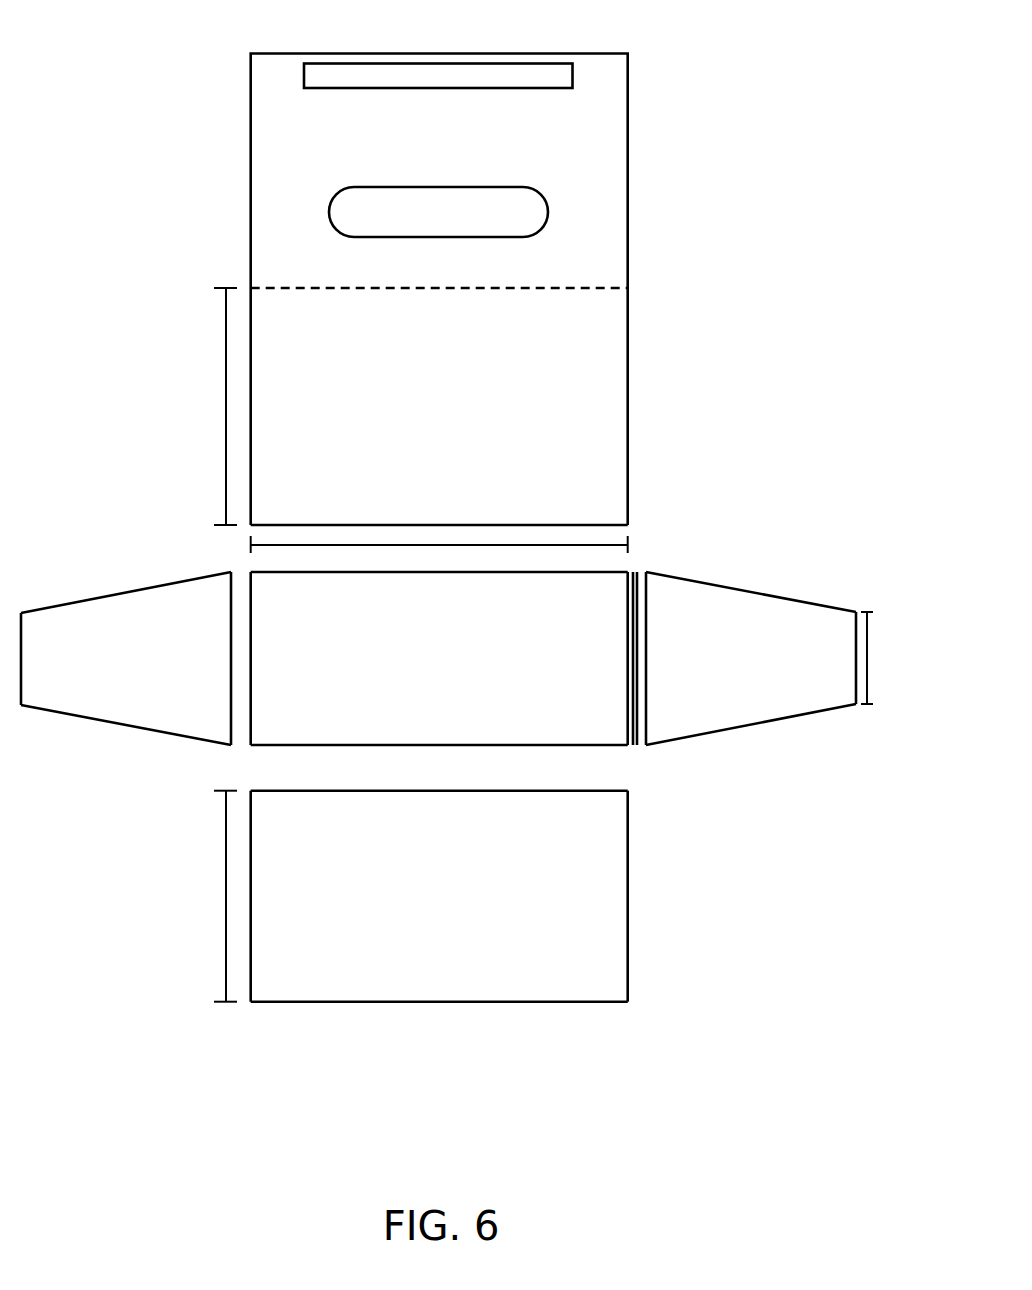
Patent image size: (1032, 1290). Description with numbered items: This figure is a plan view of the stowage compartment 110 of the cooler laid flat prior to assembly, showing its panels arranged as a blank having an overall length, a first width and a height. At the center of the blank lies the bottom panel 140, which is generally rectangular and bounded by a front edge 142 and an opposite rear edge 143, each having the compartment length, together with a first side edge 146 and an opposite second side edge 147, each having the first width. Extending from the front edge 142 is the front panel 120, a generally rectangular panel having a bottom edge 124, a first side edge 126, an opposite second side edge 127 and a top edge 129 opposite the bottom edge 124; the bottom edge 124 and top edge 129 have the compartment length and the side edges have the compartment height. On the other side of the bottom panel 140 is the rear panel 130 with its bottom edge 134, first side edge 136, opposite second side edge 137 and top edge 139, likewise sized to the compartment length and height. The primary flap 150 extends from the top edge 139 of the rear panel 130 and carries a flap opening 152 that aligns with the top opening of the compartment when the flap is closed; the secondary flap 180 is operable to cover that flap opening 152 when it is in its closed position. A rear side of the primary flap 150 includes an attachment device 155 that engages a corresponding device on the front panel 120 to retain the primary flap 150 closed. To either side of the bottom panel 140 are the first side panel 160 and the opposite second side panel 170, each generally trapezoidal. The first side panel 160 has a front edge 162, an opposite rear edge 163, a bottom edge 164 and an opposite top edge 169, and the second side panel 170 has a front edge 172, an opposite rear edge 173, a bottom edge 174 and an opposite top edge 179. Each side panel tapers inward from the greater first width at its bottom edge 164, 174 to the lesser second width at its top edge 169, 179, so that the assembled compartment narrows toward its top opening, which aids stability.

The stowage compartment 110 is at (130, 64).
The front panel 120 is at (607, 838).
The bottom edge 124 is at (438, 792).
The first side edge 126 is at (252, 895).
The second side edge 127 is at (628, 895).
The top edge 129 is at (432, 1001).
The rear panel 130 is at (607, 340).
The bottom edge 134 is at (432, 524).
The first side edge 136 is at (252, 405).
The second side edge 137 is at (628, 405).
The top edge 139 is at (438, 289).
The bottom panel 140 is at (353, 717).
The front edge 142 is at (432, 744).
The rear edge 143 is at (438, 573).
The first side edge 146 is at (252, 655).
The second side edge 147 is at (628, 655).
The primary flap 150 is at (607, 152).
The flap opening 152 is at (331, 190).
The attachment device 155 is at (431, 63).
The first side panel 160 is at (78, 692).
The front edge 162 is at (130, 724).
The rear edge 163 is at (125, 592).
The bottom edge 164 is at (230, 655).
The top edge 169 is at (22, 655).
The second side panel 170 is at (807, 690).
The front edge 172 is at (745, 727).
The rear edge 173 is at (751, 592).
The bottom edge 174 is at (648, 655).
The top edge 179 is at (855, 655).
The secondary flap 180 is at (432, 197).